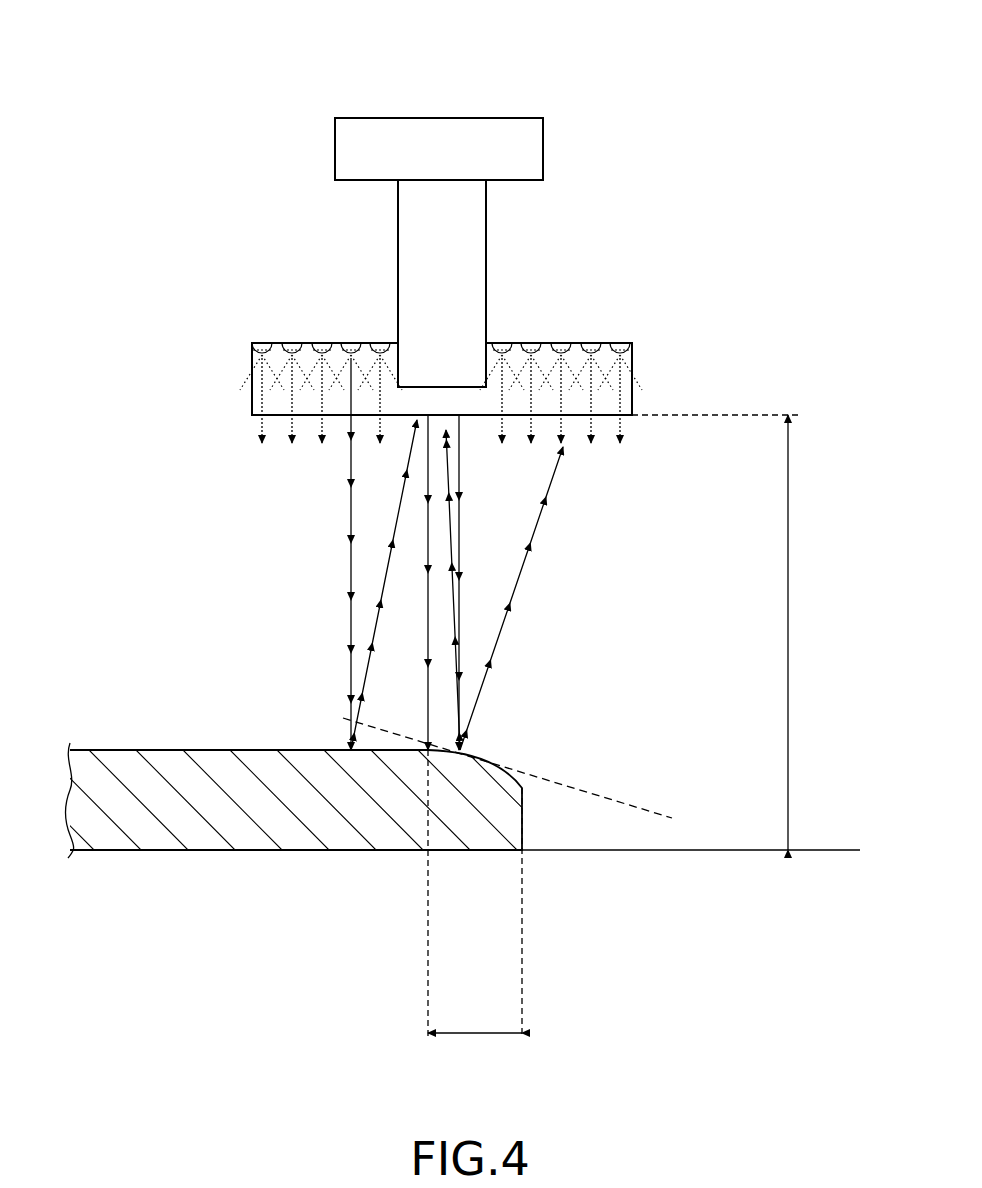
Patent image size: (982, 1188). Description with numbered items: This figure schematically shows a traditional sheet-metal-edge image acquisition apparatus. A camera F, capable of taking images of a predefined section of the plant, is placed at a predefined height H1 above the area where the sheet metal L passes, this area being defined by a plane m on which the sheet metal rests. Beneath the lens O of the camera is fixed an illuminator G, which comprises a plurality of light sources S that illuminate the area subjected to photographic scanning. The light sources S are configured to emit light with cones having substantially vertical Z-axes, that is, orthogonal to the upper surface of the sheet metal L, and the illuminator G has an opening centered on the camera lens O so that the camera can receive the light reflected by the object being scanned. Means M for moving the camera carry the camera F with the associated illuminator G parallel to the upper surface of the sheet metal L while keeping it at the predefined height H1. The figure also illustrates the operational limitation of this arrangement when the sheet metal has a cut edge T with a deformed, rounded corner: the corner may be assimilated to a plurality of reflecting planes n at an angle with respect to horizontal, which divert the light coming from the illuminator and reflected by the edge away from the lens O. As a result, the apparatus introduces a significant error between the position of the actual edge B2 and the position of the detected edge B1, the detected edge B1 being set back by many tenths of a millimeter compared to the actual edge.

The means for moving the camera M is at (521, 135).
The camera F is at (488, 235).
The illuminator G is at (252, 388).
The lens O is at (441, 385).
The light sources S is at (320, 343).
The Z-axes Z is at (437, 417).
The sheet metal L is at (155, 750).
The cut edge T is at (543, 758).
The reflecting planes n is at (660, 815).
The plane m is at (855, 852).
The predefined height H1 is at (715, 632).
The detected edge B1 is at (428, 913).
The actual edge B2 is at (522, 943).